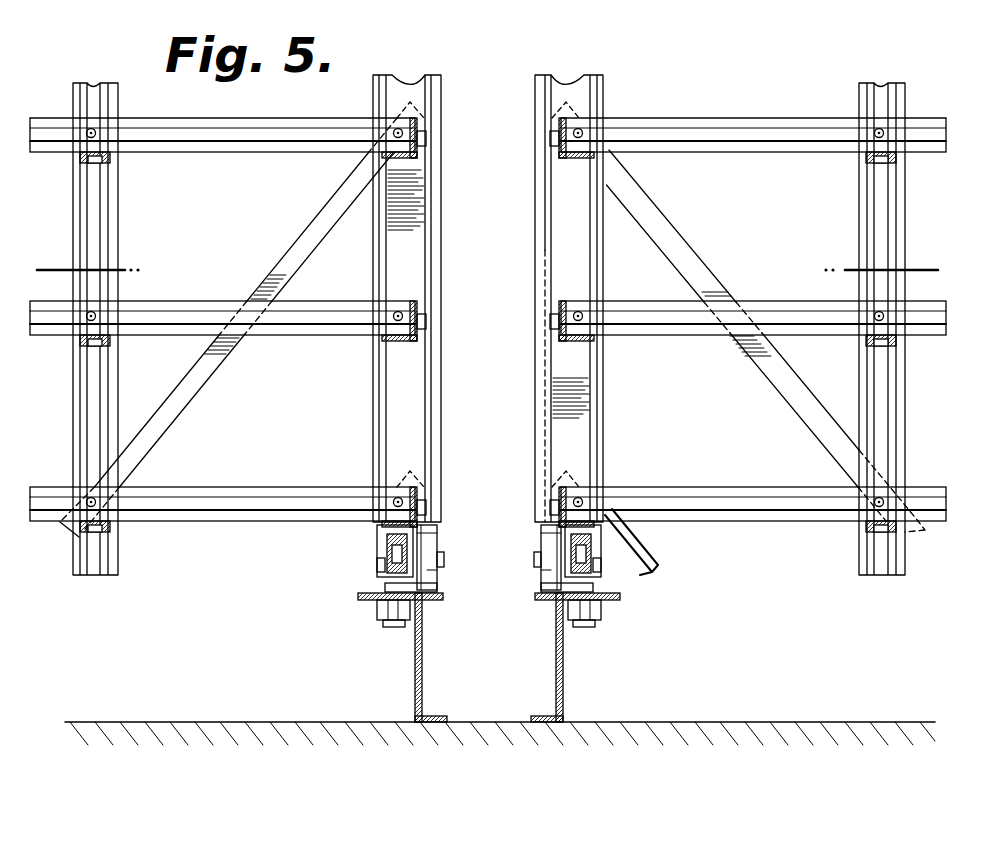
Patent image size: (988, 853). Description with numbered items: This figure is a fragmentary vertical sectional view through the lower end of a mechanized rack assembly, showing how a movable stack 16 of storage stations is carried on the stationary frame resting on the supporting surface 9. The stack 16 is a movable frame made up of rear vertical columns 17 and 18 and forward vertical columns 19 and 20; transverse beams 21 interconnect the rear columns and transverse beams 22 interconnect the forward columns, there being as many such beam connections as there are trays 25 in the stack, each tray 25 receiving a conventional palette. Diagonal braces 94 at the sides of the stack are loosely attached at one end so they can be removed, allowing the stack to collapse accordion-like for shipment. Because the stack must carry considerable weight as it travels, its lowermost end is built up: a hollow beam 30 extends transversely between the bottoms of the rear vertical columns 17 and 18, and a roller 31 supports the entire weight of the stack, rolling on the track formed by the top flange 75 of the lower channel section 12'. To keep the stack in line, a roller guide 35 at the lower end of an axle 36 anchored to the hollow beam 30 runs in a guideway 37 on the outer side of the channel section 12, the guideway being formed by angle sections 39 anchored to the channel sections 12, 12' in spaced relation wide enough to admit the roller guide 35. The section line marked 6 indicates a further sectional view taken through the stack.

The supporting surface 9 is at (849, 720).
The channel section 12 is at (397, 688).
The channel section 12' is at (587, 688).
The stack 16 is at (773, 108).
The rear vertical column 17 is at (574, 90).
The rear vertical column 18 is at (414, 86).
The forward vertical column 19 is at (85, 90).
The forward vertical column 20 is at (880, 95).
The transverse beam 21 is at (557, 488).
The transverse beam 22 is at (864, 530).
The tray 25 is at (757, 490).
The hollow beam 30 is at (598, 553).
The roller 31 is at (541, 535).
The roller guide 35 is at (590, 627).
The axle 36 is at (640, 553).
The guideway 37 is at (380, 618).
The angle section 39 is at (604, 610).
The top flange 75 is at (530, 592).
The diagonal brace 94 is at (618, 512).
The section line 6- 6 is at (931, 260).